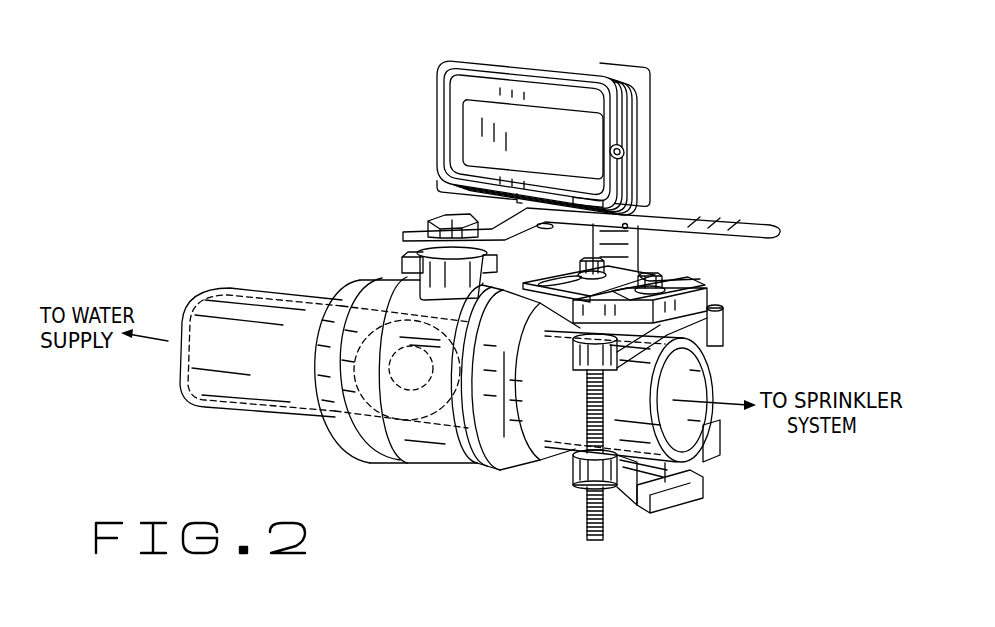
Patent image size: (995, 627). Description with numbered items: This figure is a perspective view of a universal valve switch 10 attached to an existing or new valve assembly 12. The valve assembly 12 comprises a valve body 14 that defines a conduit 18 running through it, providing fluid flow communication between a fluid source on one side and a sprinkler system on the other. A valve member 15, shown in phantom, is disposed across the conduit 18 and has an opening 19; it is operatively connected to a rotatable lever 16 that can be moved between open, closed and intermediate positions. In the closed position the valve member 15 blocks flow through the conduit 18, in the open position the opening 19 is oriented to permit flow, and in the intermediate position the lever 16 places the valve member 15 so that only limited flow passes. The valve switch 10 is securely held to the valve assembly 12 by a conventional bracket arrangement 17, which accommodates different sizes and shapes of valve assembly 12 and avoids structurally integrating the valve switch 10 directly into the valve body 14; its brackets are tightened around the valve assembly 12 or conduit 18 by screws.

The universal valve switch 10 is at (590, 60).
The valve assembly 12 is at (446, 386).
The valve body 14 is at (367, 437).
The valve member 15 is at (353, 361).
The rotatable lever 16 is at (727, 214).
The bracket arrangement 17 is at (662, 256).
The conduit 18 is at (688, 432).
The opening 19 is at (407, 390).